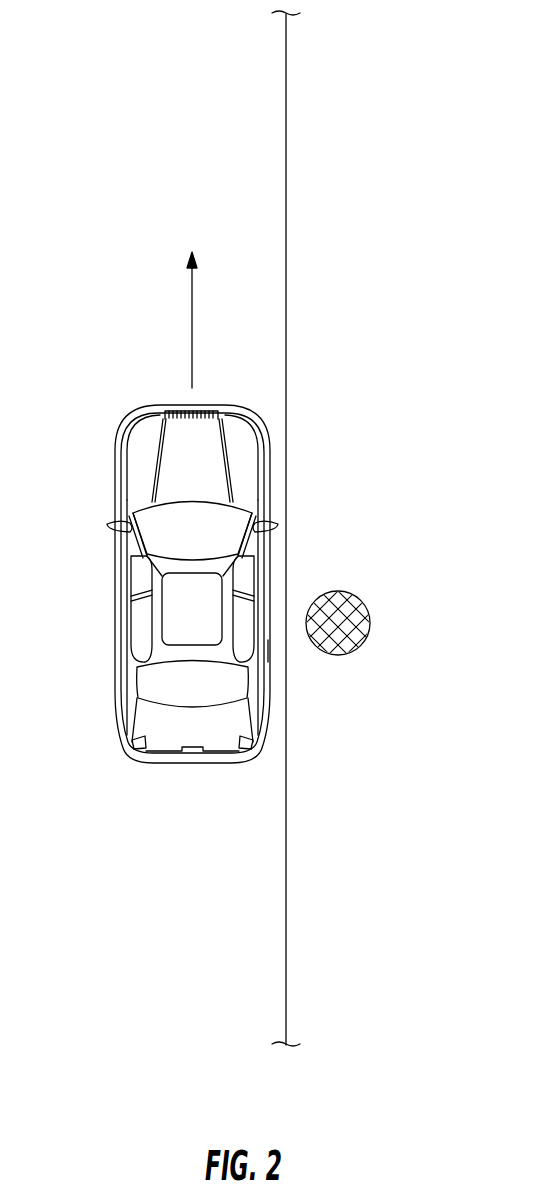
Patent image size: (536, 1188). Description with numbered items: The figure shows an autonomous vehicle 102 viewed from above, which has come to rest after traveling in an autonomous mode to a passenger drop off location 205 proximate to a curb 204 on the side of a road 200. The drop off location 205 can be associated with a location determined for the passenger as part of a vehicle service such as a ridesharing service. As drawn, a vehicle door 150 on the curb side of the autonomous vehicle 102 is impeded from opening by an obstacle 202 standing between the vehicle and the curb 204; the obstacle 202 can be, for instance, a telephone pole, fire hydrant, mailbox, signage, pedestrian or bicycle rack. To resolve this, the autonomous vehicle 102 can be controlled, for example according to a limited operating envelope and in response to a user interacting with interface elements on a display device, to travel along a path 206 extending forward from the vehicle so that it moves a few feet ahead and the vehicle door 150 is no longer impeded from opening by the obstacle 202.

The road 200 is at (63, 82).
The autonomous vehicle 102 is at (113, 498).
The vehicle door 150 is at (267, 652).
The obstacle 202 is at (372, 622).
The curb 204 is at (286, 127).
The passenger drop off location 205 is at (385, 460).
The path 206 is at (191, 330).